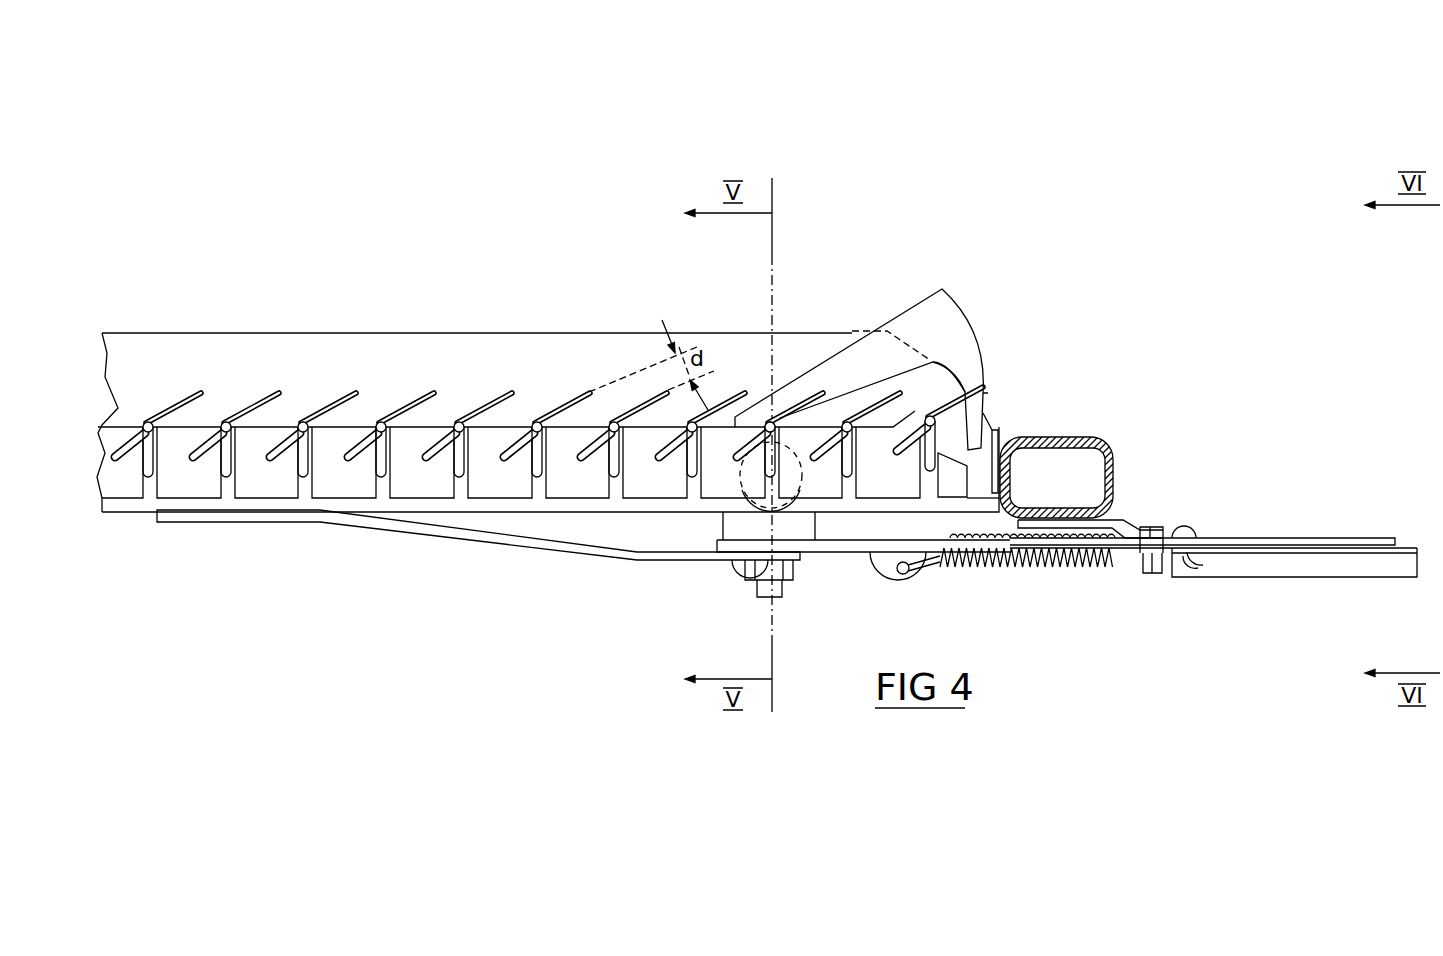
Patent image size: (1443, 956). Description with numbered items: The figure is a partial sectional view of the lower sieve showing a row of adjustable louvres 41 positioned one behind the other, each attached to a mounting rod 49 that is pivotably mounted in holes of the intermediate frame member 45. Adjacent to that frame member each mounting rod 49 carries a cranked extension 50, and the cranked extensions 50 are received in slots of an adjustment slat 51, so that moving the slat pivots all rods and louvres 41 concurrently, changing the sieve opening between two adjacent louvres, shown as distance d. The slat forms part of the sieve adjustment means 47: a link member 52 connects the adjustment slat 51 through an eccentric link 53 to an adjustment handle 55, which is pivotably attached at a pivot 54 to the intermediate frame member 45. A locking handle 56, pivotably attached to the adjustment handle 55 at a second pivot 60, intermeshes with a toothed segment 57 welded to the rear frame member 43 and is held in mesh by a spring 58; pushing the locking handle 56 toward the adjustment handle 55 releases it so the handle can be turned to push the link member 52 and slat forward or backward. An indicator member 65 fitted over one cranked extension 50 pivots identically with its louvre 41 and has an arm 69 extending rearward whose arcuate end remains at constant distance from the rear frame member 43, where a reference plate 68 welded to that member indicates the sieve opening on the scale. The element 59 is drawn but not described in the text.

The adjustable louvre 41 is at (738, 452).
The rear frame member 43 is at (1062, 438).
The intermediate frame member 45 is at (803, 340).
The sieve adjustment means 47 is at (1222, 520).
The mounting rod 49 is at (770, 424).
The cranked extension 50 is at (770, 477).
The adjustment slat 51 is at (358, 483).
The link member 52 is at (477, 541).
The eccentric link 53 is at (742, 571).
The pivot 54 is at (778, 588).
The adjustment handle 55 is at (1287, 535).
The locking handle 56 is at (1260, 567).
The toothed segment 57 is at (1113, 525).
The spring 58 is at (1035, 563).
The pin roller 59 is at (889, 572).
The second pivot 60 is at (1158, 572).
The indicator member 65 is at (945, 322).
The reference plate 68 is at (997, 430).
The arm 69 is at (863, 357).